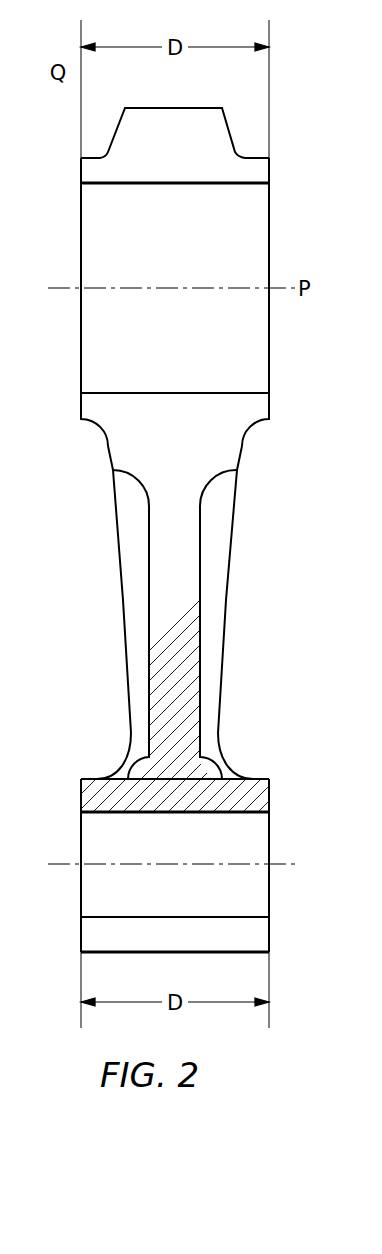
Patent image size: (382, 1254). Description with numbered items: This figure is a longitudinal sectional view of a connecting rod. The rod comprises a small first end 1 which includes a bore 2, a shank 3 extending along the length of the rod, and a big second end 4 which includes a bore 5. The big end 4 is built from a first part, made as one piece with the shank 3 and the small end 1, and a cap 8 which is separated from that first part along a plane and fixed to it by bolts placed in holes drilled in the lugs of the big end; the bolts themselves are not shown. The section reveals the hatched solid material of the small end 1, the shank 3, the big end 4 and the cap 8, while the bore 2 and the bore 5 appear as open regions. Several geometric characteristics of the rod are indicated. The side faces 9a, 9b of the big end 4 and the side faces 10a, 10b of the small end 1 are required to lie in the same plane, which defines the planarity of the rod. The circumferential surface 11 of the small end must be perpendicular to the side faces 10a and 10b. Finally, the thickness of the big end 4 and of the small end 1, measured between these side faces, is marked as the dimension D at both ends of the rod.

The small first end 1 is at (265, 935).
The bore 2 is at (90, 890).
The shank 3 is at (150, 592).
The big second end 4 is at (90, 428).
The bore 5 is at (92, 338).
The cap 8 is at (81, 172).
The side face 9a is at (81, 257).
The side face 9b is at (269, 240).
The side face 10a is at (81, 838).
The side face 10b is at (270, 836).
The circumferential surface 11 is at (155, 953).